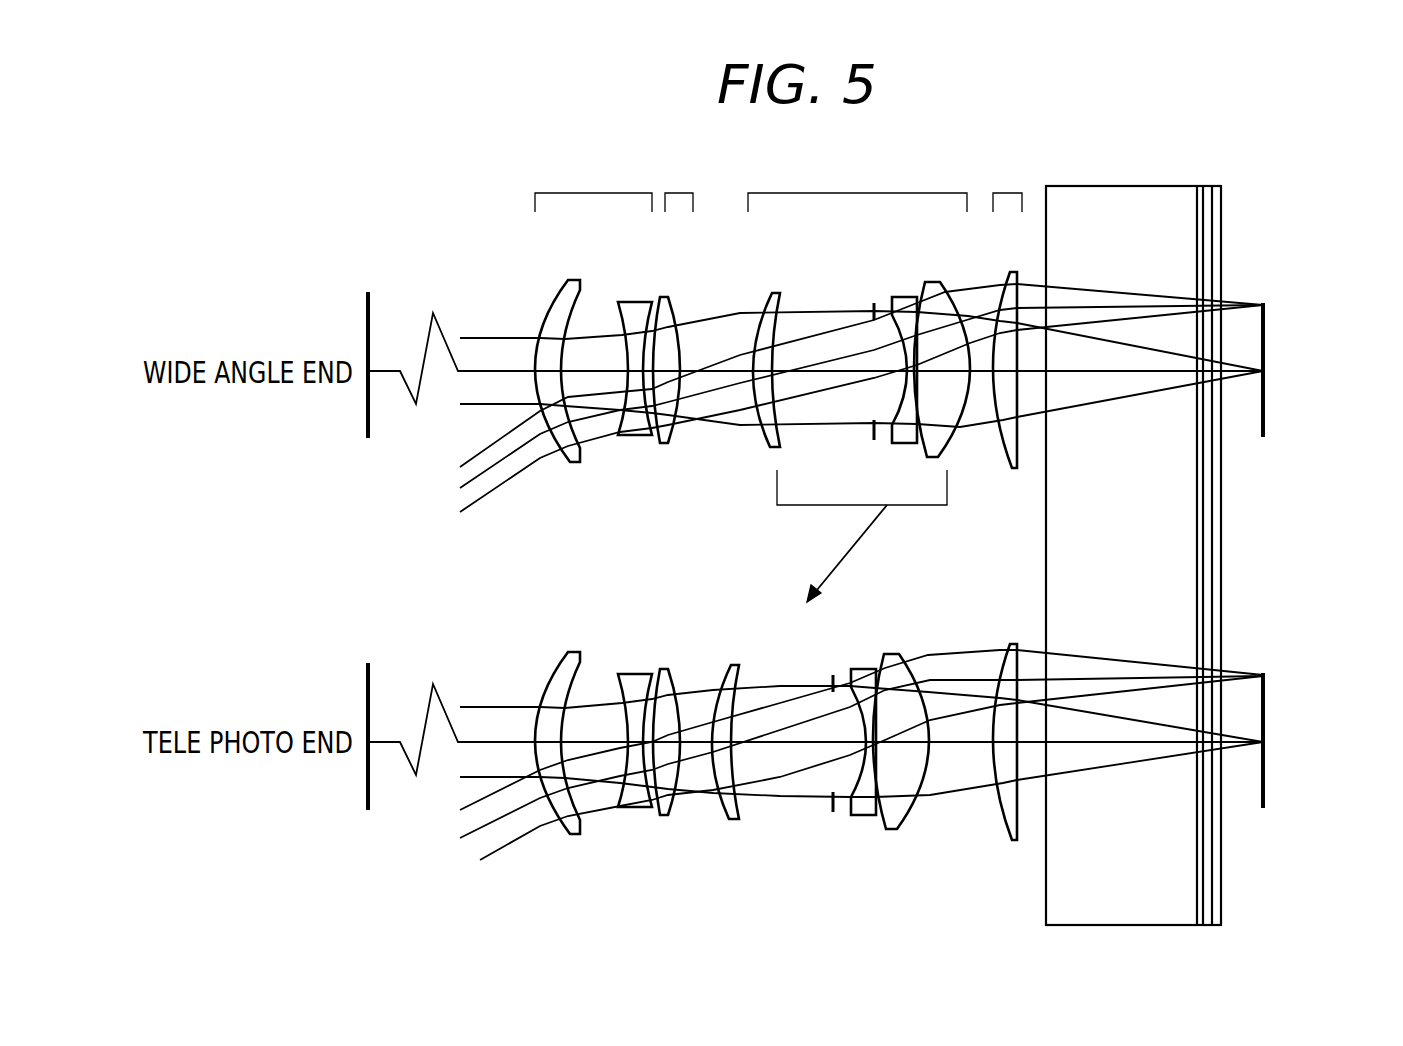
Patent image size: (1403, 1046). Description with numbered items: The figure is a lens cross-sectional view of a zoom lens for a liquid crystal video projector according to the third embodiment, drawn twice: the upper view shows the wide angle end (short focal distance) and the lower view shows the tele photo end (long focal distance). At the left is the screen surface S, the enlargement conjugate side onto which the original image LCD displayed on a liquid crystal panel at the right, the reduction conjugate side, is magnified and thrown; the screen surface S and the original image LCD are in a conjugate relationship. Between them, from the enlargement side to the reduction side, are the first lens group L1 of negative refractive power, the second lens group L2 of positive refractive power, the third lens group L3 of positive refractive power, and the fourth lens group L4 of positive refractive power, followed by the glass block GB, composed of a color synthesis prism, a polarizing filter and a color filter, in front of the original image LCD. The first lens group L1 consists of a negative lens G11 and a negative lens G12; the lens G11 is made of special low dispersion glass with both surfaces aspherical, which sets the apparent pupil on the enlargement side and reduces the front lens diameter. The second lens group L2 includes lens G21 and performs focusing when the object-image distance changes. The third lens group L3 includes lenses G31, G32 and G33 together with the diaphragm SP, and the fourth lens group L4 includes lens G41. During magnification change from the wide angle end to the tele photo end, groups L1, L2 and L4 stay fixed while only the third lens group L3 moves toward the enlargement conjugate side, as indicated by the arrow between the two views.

The screen surface S is at (366, 310).
The first lens group L1 is at (593, 186).
The second lens group L2 is at (679, 186).
The third lens group L3 is at (857, 381).
The fourth lens group L4 is at (1007, 186).
The negative lens G11 is at (558, 302).
The negative lens G12 is at (635, 307).
The positive lens of second lens unit G21 is at (667, 297).
The meniscus lens of third lens unit G31 is at (773, 292).
The negative lens of third lens unit G32 is at (907, 298).
The positive lens of third lens unit G33 is at (928, 287).
The positive lens of fourth lens unit G41 is at (1013, 270).
The diaphragm SP is at (873, 430).
The glass block GB is at (1221, 555).
The original image on liquid crystal panel LCD is at (1266, 352).